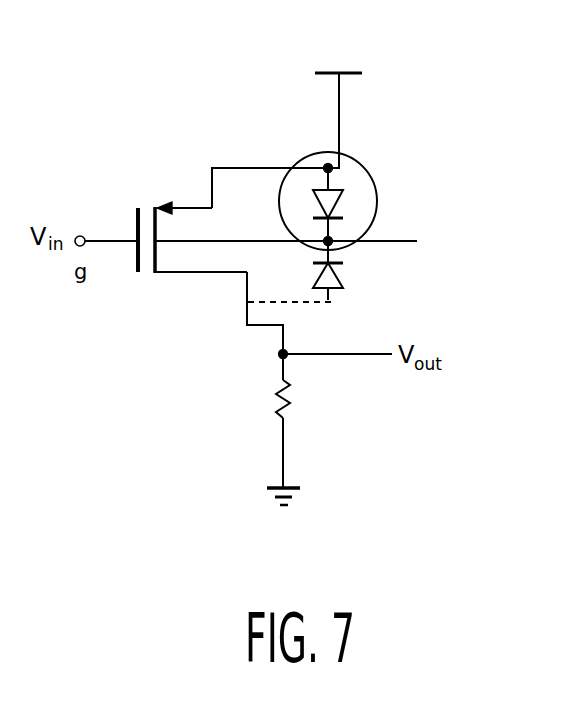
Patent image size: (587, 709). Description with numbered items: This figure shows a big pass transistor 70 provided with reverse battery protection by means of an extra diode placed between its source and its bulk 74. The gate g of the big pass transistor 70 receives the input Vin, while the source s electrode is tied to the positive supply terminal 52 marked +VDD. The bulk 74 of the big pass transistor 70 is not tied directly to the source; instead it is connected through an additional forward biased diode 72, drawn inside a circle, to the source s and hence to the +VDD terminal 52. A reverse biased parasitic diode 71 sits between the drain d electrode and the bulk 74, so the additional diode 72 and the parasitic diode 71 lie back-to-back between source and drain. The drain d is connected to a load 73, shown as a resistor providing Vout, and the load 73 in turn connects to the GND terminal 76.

The positive supply voltage VDD terminal 52 is at (367, 60).
The big pass transistor 70 is at (130, 273).
The parasitic diode 71 is at (340, 275).
The additional diode 72 is at (373, 182).
The load 73 is at (290, 400).
The bulk 74 is at (417, 242).
The GND terminal 76 is at (270, 492).